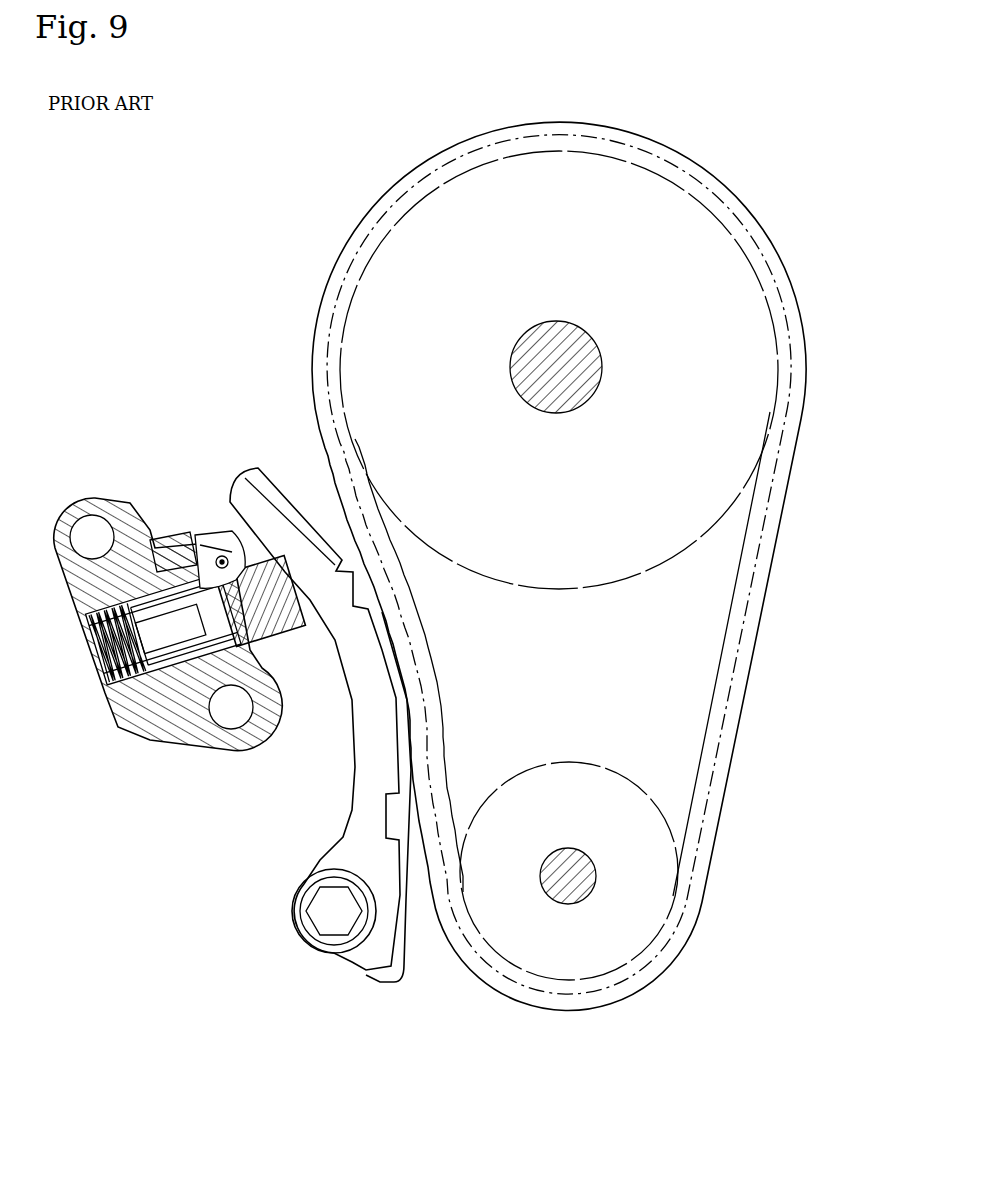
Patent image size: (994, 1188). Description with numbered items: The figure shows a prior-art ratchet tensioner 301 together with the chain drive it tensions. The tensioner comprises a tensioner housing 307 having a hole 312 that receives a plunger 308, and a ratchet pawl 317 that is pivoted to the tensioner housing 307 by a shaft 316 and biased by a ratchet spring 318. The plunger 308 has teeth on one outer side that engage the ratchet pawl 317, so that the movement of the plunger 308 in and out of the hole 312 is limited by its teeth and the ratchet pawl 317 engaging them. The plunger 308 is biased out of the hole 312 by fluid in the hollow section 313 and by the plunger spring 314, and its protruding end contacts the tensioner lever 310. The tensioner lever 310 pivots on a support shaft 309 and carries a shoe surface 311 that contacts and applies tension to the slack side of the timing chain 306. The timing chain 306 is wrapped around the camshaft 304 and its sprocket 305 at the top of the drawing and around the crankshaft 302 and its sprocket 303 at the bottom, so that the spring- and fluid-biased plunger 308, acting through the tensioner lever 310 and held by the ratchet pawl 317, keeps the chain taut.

The ratchet tensioner 301 is at (78, 478).
The crankshaft 302 is at (582, 886).
The sprocket 303 is at (650, 881).
The camshaft 304 is at (600, 347).
The sprocket 305 is at (752, 349).
The timing chain 306 is at (797, 428).
The tensioner housing 307 is at (147, 717).
The plunger 308 is at (287, 647).
The support shaft 309 is at (327, 918).
The tensioner lever 310 is at (392, 722).
The shoe surface 311 is at (410, 664).
The hole 312 is at (100, 684).
The hollow section 313 is at (170, 650).
The plunger spring 314 is at (93, 620).
The shaft 316 is at (222, 548).
The ratchet pawl 317 is at (202, 542).
The ratchet spring 318 is at (160, 540).